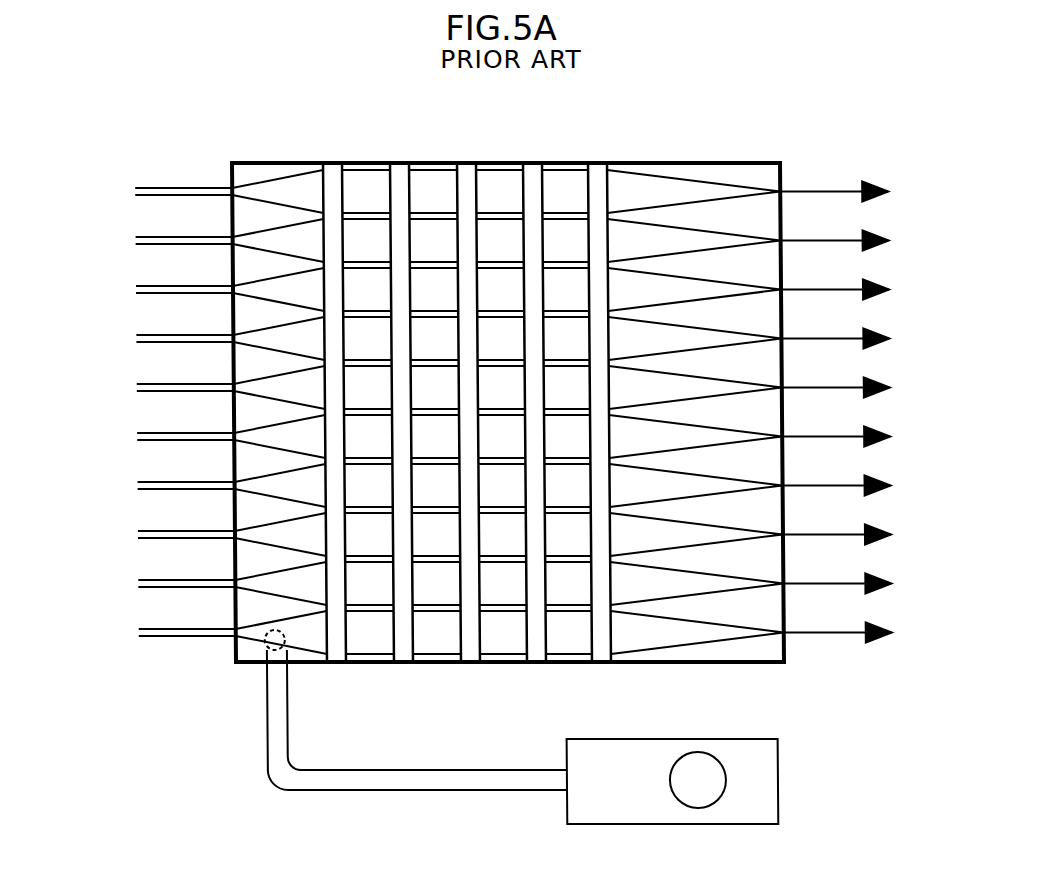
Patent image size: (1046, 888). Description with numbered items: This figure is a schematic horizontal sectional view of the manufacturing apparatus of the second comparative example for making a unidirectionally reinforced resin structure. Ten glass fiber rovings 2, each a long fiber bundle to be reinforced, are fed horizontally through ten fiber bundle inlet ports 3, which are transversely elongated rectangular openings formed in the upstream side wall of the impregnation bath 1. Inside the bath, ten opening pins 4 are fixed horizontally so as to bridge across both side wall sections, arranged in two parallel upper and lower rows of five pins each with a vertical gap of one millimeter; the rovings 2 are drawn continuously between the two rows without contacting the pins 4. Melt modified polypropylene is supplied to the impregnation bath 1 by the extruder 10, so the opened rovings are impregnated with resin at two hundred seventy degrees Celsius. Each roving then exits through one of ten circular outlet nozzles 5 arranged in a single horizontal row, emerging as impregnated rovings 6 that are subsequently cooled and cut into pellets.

The impregnation bath 1 is at (473, 379).
The glass fiber roving 2 is at (173, 189).
The fiber bundle inlet port 3 is at (231, 187).
The opening pin 4 is at (331, 176).
The outlet nozzle 5 is at (781, 192).
The impregnated roving 6 is at (833, 190).
The extruder 10 is at (757, 752).